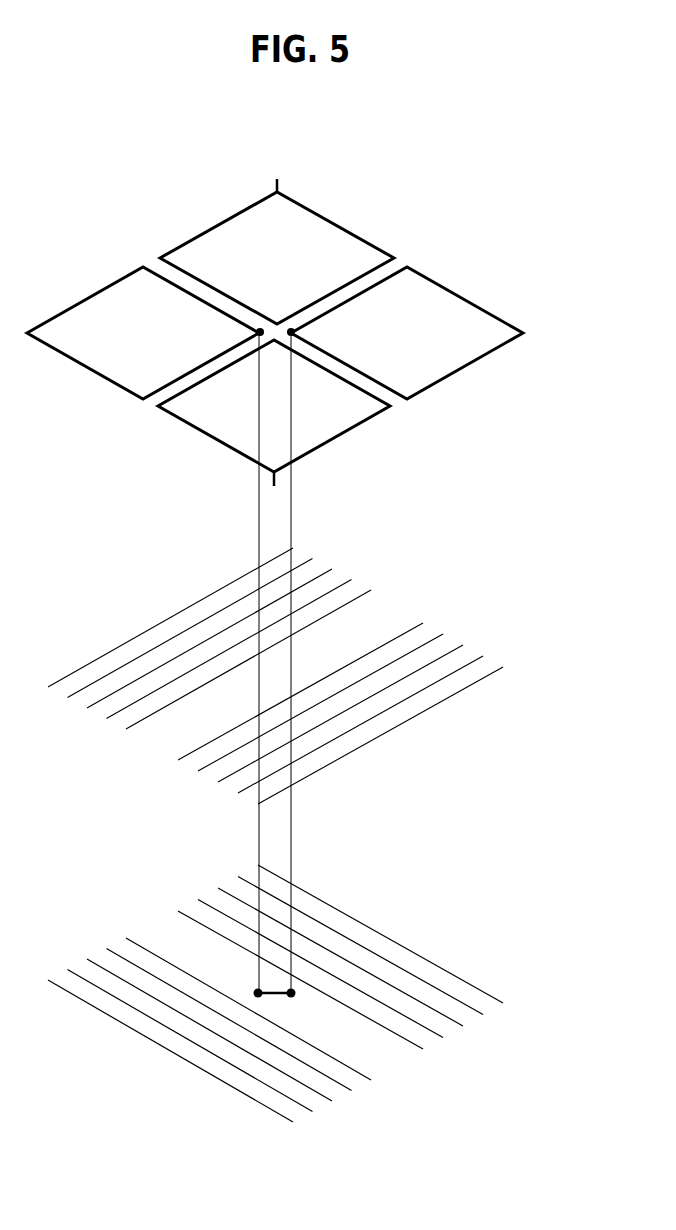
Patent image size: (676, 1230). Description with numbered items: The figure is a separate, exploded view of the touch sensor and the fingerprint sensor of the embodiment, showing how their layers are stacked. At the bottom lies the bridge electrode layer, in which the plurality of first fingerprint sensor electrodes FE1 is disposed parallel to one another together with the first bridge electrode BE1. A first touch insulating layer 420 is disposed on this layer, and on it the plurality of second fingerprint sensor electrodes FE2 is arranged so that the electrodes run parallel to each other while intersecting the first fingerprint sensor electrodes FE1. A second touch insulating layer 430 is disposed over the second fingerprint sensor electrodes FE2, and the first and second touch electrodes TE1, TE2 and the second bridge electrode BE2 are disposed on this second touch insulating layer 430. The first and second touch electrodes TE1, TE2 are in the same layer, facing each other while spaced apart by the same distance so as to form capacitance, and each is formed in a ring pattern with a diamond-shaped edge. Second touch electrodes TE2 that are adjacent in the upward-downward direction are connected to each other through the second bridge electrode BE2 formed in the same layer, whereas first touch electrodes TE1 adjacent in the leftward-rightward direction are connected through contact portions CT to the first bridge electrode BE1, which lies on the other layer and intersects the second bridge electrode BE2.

The first touch electrode TE1 is at (92, 295).
The second touch electrode TE2 is at (221, 223).
The first bridge electrode BE1 is at (280, 998).
The second bridge electrode BE2 is at (281, 188).
The contact portion CT is at (295, 496).
The second touch insulating layer 430 is at (485, 543).
The second fingerprint sensor electrodes FE2 is at (455, 671).
The first touch insulating layer 420 is at (487, 839).
The first fingerprint sensor electrodes FE1 is at (478, 988).